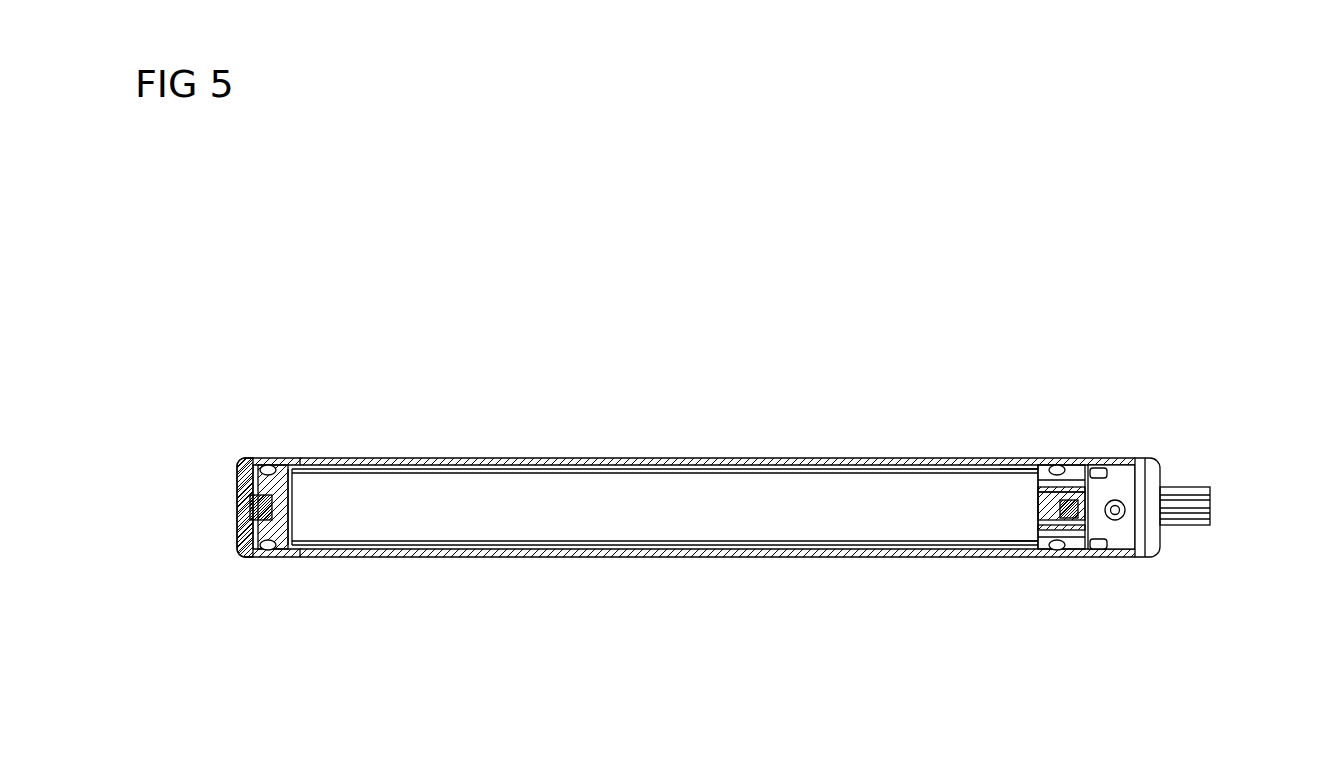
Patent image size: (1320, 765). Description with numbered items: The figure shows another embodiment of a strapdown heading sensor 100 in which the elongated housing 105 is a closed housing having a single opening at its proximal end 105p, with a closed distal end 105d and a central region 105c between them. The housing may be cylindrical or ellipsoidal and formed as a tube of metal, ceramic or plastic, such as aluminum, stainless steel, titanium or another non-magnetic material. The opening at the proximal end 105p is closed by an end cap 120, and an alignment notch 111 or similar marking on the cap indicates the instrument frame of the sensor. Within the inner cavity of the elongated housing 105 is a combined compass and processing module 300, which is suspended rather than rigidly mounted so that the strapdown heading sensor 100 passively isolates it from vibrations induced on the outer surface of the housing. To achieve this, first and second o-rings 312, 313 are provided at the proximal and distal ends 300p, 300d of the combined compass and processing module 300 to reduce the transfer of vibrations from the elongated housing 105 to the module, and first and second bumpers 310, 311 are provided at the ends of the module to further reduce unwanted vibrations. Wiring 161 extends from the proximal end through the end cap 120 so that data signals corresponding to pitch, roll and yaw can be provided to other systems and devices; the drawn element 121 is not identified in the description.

The strapdown heading sensor 100 is at (1082, 300).
The elongated housing 105 is at (568, 458).
The central region 105c is at (660, 442).
The distal end 105d is at (248, 443).
The proximal end 105p is at (1118, 437).
The combined compass and processing module 300 is at (663, 550).
The distal end of the combined compass and processing module 300d is at (238, 555).
The proximal end of the combined compass and processing module 300p is at (1068, 451).
The first bumper 310 is at (270, 502).
The second bumper 311 is at (1062, 507).
The first o-ring 312 is at (270, 550).
The second o-ring 313 is at (1058, 555).
The end cap 120 is at (1158, 464).
The connector seals 121 is at (1102, 555).
The alignment notch 111 is at (1157, 563).
The wiring 161 is at (1068, 477).